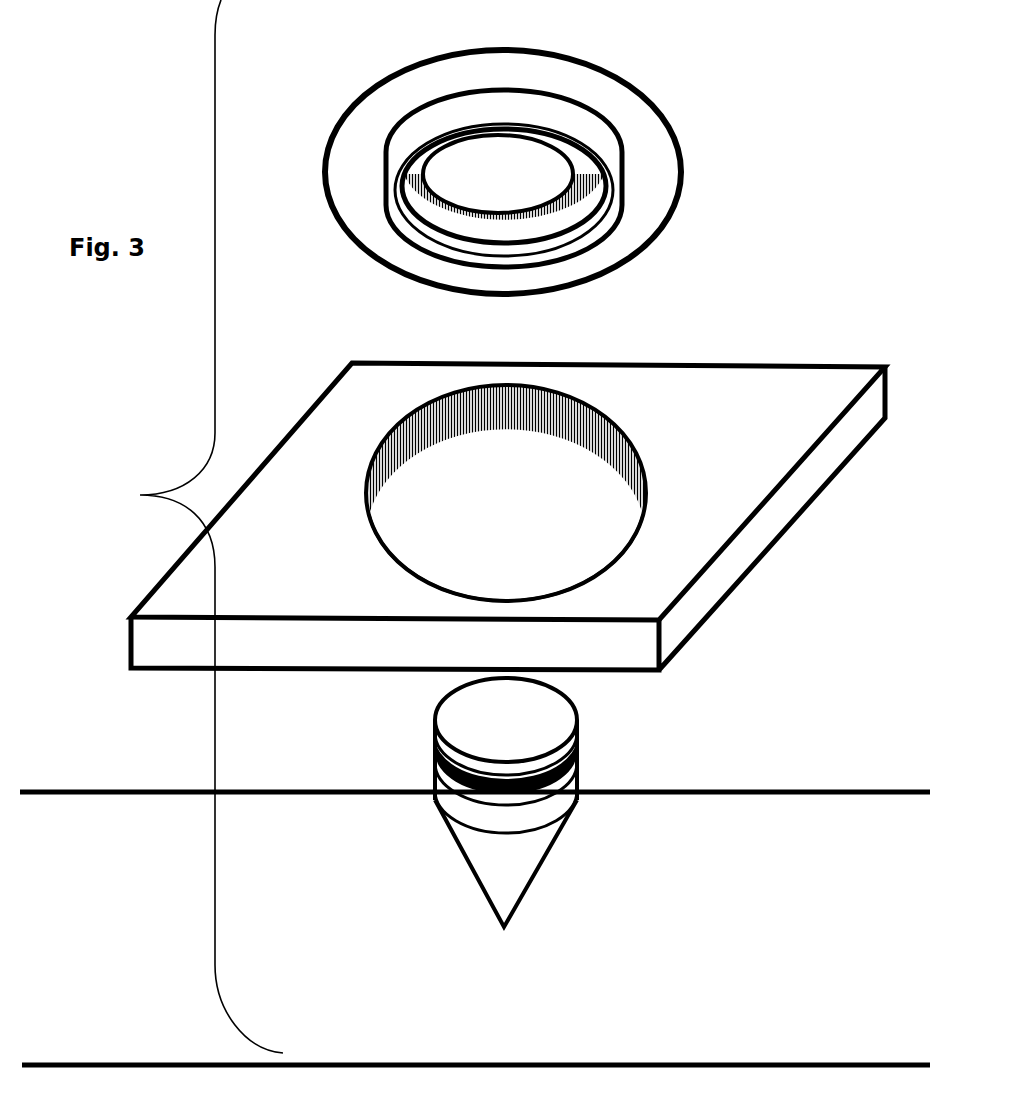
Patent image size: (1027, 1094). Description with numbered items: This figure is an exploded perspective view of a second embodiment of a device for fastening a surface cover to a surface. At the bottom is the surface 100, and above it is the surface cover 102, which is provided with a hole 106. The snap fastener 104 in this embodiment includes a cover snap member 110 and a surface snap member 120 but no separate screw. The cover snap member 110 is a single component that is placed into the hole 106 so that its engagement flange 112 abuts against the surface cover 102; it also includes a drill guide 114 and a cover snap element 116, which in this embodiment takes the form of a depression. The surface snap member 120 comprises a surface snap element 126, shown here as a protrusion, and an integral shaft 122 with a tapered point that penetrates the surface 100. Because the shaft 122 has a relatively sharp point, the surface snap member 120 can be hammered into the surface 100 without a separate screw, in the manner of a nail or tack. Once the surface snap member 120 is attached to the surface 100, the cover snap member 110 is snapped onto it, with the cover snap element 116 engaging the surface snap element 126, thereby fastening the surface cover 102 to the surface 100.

The surface 100 is at (880, 833).
The surface cover 102 is at (508, 516).
The snap fastener 104 is at (185, 526).
The hole 106 is at (596, 489).
The cover snap member 110 is at (558, 178).
The engagement flange 112 is at (568, 268).
The drill guide 114 is at (548, 128).
The cover snap element 116 is at (418, 214).
The surface snap member 120 is at (531, 814).
The shaft 122 is at (575, 812).
The surface snap element 126 is at (578, 770).